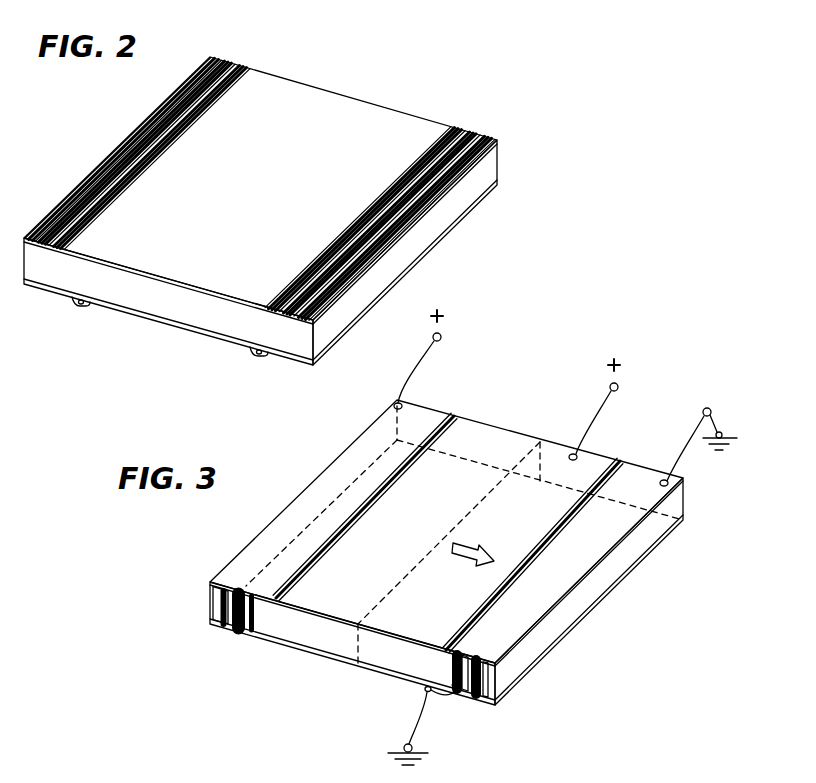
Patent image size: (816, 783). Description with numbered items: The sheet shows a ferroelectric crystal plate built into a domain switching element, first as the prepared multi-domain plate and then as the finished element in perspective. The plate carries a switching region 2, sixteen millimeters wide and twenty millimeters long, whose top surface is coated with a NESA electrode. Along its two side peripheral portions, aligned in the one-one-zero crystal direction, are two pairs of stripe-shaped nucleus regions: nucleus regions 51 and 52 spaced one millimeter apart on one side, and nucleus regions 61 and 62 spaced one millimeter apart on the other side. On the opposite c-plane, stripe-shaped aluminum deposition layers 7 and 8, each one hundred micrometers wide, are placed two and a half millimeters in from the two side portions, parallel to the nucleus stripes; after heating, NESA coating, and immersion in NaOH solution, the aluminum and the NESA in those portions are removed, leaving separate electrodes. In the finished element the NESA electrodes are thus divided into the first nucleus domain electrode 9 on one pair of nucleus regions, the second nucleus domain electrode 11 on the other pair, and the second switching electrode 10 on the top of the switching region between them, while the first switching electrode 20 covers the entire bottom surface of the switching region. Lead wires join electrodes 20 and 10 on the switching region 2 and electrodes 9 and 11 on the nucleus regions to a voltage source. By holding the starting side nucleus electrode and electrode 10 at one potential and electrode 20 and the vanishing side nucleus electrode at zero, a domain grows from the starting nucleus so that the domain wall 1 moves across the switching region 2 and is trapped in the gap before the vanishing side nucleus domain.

In FIG. 3, the domain wall 1 is at (540, 482).
In FIG. 2, the switching region 2 is at (253, 64).
In FIG. 3, the switching region 2 is at (248, 643).
In FIG. 3, the first switching electrode 20 is at (378, 676).
In FIG. 2, the striped-shaped nucleus region 51 is at (256, 68).
In FIG. 3, the striped-shaped nucleus region 51 is at (459, 701).
In FIG. 2, the striped-shaped nucleus region 52 is at (222, 61).
In FIG. 3, the striped-shaped nucleus region 52 is at (476, 704).
In FIG. 2, the striped-shaped nucleus region 61 is at (462, 130).
In FIG. 3, the striped-shaped nucleus region 61 is at (240, 633).
In FIG. 2, the striped-shaped nucleus region 62 is at (486, 139).
In FIG. 3, the striped-shaped nucleus region 62 is at (222, 628).
In FIG. 2, the striped-shaped aluminum deposition layer 7 is at (78, 304).
In FIG. 3, the striped-shaped aluminum deposition layer 7 is at (623, 464).
In FIG. 2, the striped-shaped aluminum deposition layer 8 is at (258, 358).
In FIG. 3, the striped-shaped aluminum deposition layer 8 is at (457, 421).
In FIG. 3, the first nucleus domain electrode 9 is at (643, 478).
In FIG. 3, the second switching electrode 10 is at (554, 453).
In FIG. 3, the second nucleus domain electrode 11 is at (420, 418).